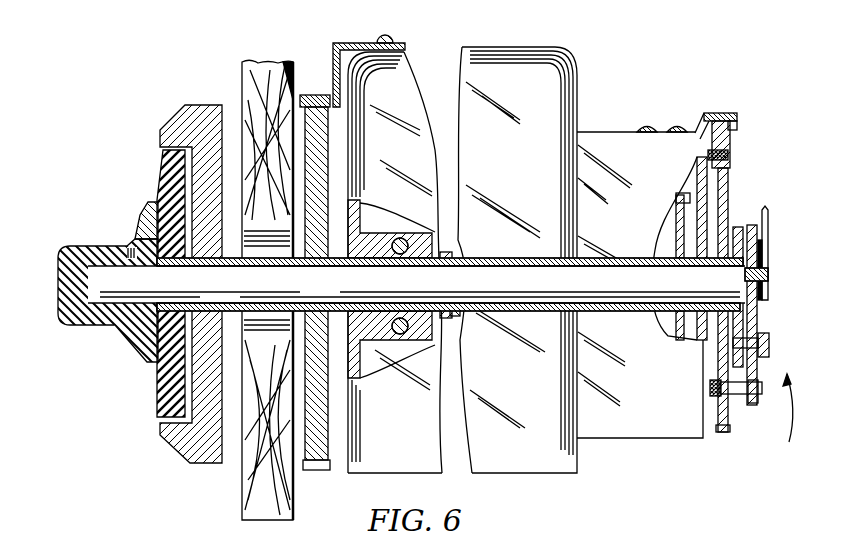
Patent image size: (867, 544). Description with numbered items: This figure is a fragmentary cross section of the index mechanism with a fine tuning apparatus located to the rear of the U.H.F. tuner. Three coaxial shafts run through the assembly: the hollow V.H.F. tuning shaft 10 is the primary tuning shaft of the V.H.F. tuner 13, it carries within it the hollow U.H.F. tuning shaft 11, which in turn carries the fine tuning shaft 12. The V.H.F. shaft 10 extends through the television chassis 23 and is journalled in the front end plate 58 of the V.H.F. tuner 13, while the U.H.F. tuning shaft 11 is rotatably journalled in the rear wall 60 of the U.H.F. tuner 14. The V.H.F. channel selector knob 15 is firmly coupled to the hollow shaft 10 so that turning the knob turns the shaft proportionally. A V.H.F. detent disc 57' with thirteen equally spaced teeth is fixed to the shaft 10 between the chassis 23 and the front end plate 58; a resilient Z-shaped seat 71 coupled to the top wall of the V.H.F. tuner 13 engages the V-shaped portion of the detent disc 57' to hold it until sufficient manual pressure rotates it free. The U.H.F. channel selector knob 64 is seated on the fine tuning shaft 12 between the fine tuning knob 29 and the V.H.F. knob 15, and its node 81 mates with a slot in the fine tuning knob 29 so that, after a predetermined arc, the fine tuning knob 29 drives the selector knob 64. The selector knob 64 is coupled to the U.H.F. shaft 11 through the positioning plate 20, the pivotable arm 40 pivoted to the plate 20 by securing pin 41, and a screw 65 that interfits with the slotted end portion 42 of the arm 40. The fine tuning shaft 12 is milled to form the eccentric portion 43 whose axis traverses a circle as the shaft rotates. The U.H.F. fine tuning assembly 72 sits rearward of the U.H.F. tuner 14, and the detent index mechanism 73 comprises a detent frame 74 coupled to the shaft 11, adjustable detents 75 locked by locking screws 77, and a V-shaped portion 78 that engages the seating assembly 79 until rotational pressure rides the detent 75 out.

The hollow V.H.F. tuning shaft 10 is at (450, 251).
The hollow U.H.F. tuning shaft 11 is at (453, 321).
The fine tuning shaft 12 is at (296, 292).
The V.H.F. tuner 13 is at (460, 105).
The U.H.F. tuner 14 is at (617, 150).
The V.H.F. channel selector knob 15 is at (182, 131).
The positioning plate 20 is at (738, 232).
The television chassis 23 is at (248, 105).
The fine tuning knob 29 is at (60, 290).
The pivotable arm 40 is at (757, 305).
The securing pin 41 is at (769, 342).
The slotted end portion 42 is at (755, 386).
The milled portion of fine tuning shaft 43 is at (770, 276).
The V.H.F. detent disc 57' is at (314, 269).
The front end plate 58 is at (391, 289).
The rear wall of U.H.F. tuner 60 is at (700, 195).
The U.H.F. channel selector knob 64 is at (163, 195).
The screw 65 is at (738, 400).
The resilient Z-shaped seat 71 is at (333, 72).
The U.H.F. fine tuning assembly 72 is at (786, 419).
The detent index mechanism 73 is at (757, 106).
The detent frame 74 is at (730, 179).
The adjustable detent 75 is at (732, 139).
The locking screw 77 is at (730, 156).
The V-shaped portion 78 is at (737, 125).
The seating assembly 79 is at (725, 113).
The node 81 is at (144, 245).